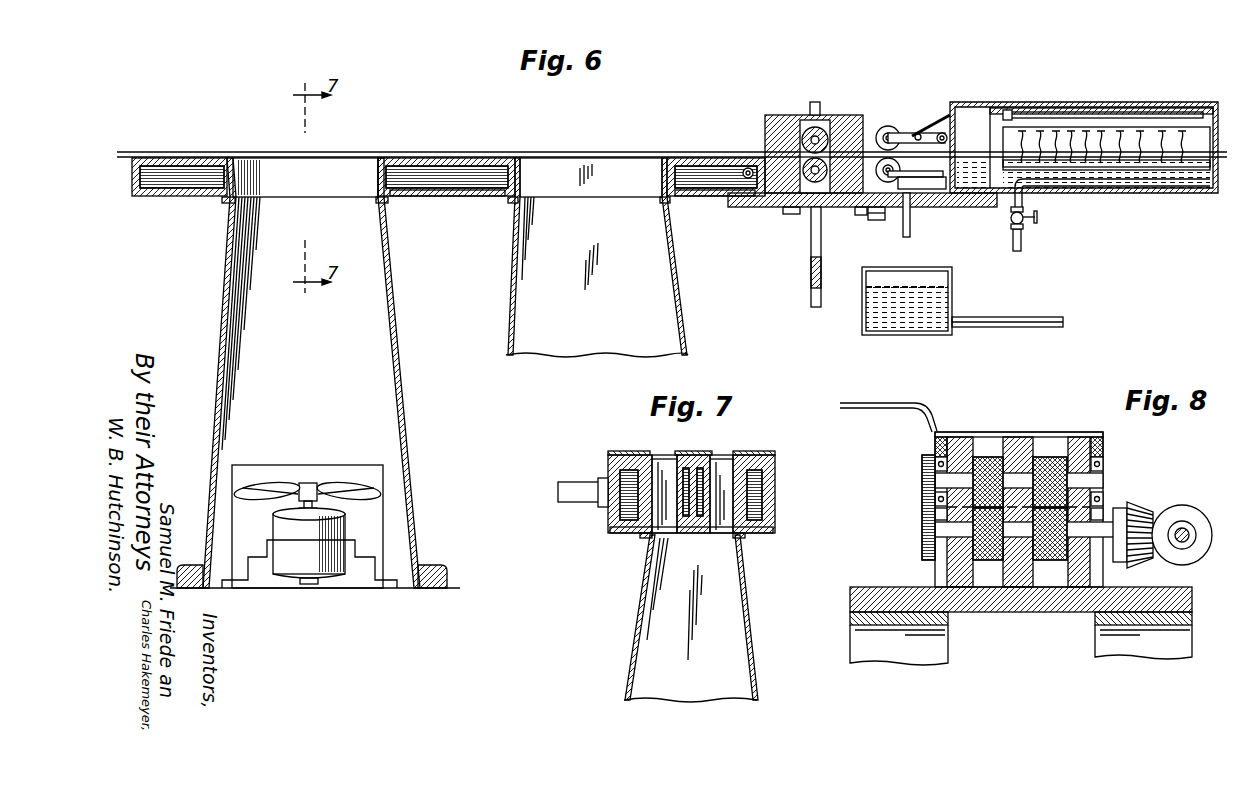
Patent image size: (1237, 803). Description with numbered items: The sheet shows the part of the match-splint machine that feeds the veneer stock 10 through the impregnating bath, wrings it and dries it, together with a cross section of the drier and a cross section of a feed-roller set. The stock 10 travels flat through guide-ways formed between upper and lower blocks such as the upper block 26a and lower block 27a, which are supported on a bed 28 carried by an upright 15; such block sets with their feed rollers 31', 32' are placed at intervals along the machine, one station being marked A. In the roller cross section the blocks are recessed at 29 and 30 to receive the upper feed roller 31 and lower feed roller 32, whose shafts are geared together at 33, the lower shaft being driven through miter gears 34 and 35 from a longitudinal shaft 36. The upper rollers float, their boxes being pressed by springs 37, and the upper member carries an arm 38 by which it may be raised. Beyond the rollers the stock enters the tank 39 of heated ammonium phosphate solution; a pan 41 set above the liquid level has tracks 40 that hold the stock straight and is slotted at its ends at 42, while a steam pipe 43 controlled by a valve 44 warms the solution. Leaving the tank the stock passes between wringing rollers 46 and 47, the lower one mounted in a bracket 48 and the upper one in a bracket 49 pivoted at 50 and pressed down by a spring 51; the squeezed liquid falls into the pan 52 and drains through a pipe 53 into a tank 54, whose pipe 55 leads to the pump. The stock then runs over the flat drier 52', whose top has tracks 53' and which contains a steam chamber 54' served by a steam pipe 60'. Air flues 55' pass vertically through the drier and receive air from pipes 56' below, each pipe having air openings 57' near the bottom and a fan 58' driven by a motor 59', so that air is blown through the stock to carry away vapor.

In FIG. 6, the veneer stock 10 is at (1196, 159).
In FIG. 6, the upright 15 is at (808, 253).
In FIG. 8, the upright 15 is at (908, 652).
In FIG. 6, the upper block 26a is at (859, 118).
In FIG. 6, the lower block 27a is at (780, 192).
In FIG. 6, the bed 28 is at (827, 221).
In FIG. 8, the bed 28 is at (1010, 600).
In FIG. 8, the recess 29 is at (1048, 445).
In FIG. 8, the recess 30 is at (1060, 595).
In FIG. 8, the upper feed roller 31 is at (988, 453).
In FIG. 6, the feed roller 31' is at (792, 115).
In FIG. 8, the lower feed roller 32 is at (1009, 594).
In FIG. 6, the feed roller 32' is at (802, 206).
In FIG. 8, the feed roller 32' is at (1013, 576).
In FIG. 8, the gearing 33 is at (915, 507).
In FIG. 8, the miter gear 34 is at (1135, 502).
In FIG. 8, the miter gear 35 is at (1168, 506).
In FIG. 8, the shaft 36 is at (1186, 530).
In FIG. 8, the spring 37 is at (935, 440).
In FIG. 6, the arm 38 is at (820, 103).
In FIG. 8, the arm 38 is at (875, 403).
In FIG. 6, the tank 39 is at (1205, 193).
In FIG. 6, the tracks 40 is at (1210, 104).
In FIG. 6, the pan 41 is at (1192, 145).
In FIG. 6, the end slot 42 is at (992, 150).
In FIG. 6, the steam pipe 43 is at (1108, 188).
In FIG. 6, the valve 44 is at (1038, 217).
In FIG. 6, the wringing roller 46 is at (918, 189).
In FIG. 6, the wringing roller 47 is at (895, 121).
In FIG. 6, the bracket 48 is at (895, 176).
In FIG. 6, the bracket 49 is at (935, 132).
In FIG. 6, the pivot 50 is at (950, 114).
In FIG. 6, the spring 51 is at (923, 125).
In FIG. 6, the pan 52 is at (862, 241).
In FIG. 6, the flat drier 52' is at (446, 158).
In FIG. 7, the flat drier 52' is at (685, 494).
In FIG. 6, the pipe 53 is at (898, 228).
In FIG. 6, the tracks 53' is at (716, 158).
In FIG. 7, the tracks 53' is at (694, 436).
In FIG. 6, the tank 54 is at (924, 300).
In FIG. 6, the steam chamber 54' is at (572, 211).
In FIG. 7, the steam chamber 54' is at (714, 519).
In FIG. 6, the pipe 55 is at (1007, 306).
In FIG. 6, the air flue 55' is at (447, 158).
In FIG. 7, the air flue 55' is at (714, 547).
In FIG. 6, the air pipe 56' is at (541, 268).
In FIG. 7, the air pipe 56' is at (708, 618).
In FIG. 6, the air opening 57' is at (315, 373).
In FIG. 6, the fan 58' is at (307, 506).
In FIG. 6, the motor 59' is at (309, 548).
In FIG. 6, the steam pipe 60' is at (747, 149).
In FIG. 6, the roller station A is at (808, 78).